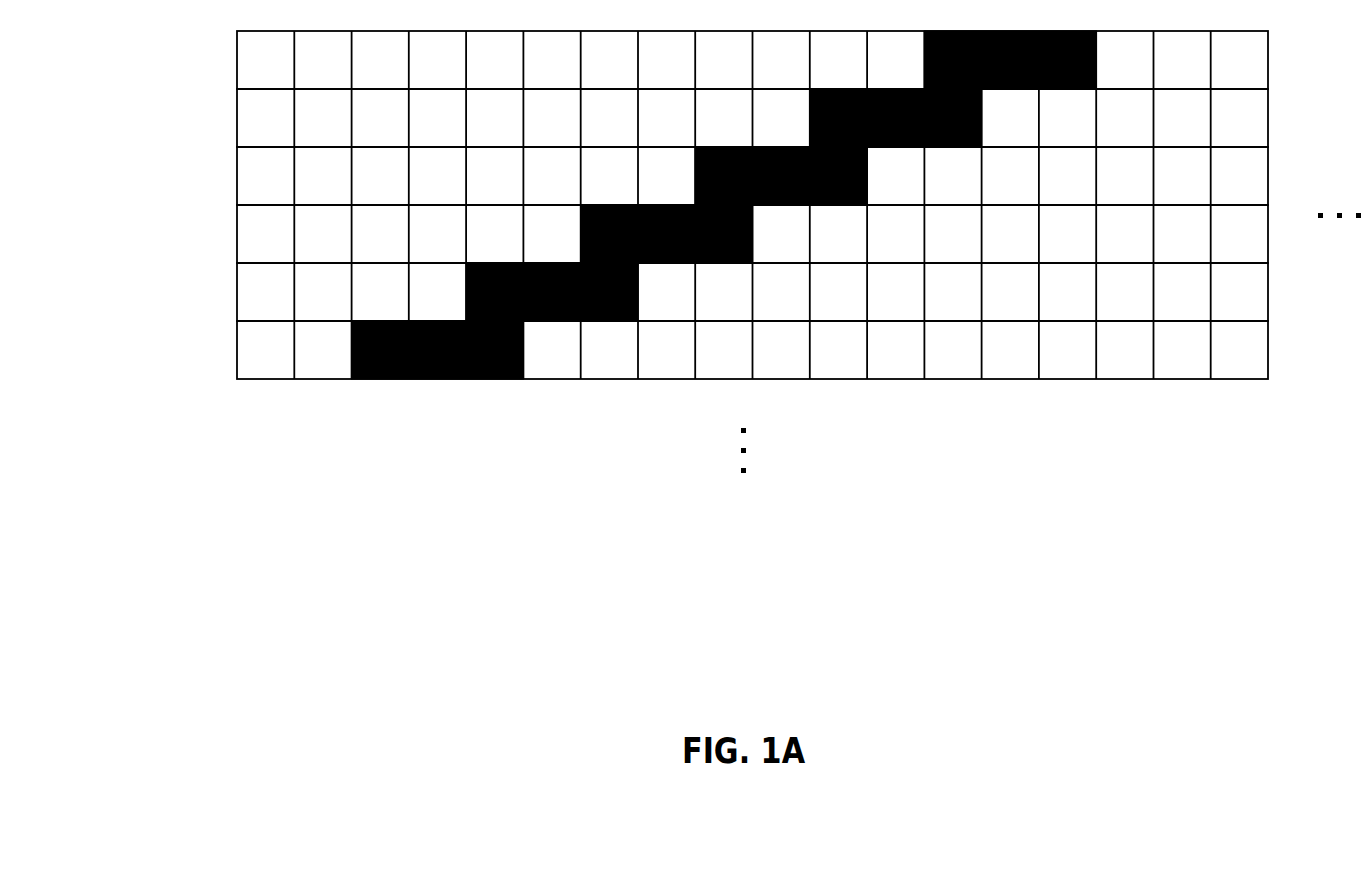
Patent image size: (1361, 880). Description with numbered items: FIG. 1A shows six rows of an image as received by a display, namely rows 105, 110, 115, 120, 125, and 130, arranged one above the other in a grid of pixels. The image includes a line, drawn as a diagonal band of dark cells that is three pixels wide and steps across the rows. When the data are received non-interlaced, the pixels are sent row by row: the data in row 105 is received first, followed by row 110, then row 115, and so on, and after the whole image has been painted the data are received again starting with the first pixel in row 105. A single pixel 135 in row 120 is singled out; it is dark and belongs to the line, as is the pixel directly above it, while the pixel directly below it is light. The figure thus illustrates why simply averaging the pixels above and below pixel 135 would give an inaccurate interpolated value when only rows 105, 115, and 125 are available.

The row 105 is at (165, 61).
The row 110 is at (165, 118).
The row 115 is at (165, 176).
The row 120 is at (165, 234).
The row 125 is at (165, 292).
The row 130 is at (165, 349).
The pixel 135 is at (723, 275).